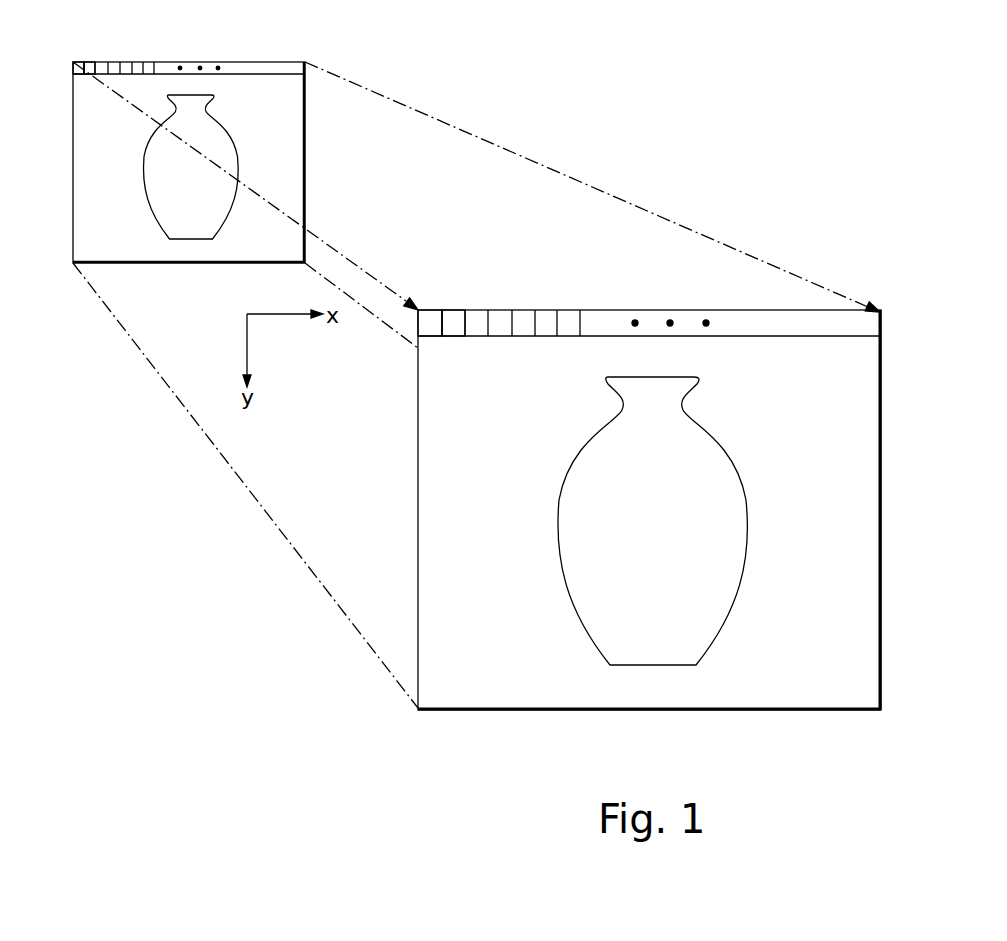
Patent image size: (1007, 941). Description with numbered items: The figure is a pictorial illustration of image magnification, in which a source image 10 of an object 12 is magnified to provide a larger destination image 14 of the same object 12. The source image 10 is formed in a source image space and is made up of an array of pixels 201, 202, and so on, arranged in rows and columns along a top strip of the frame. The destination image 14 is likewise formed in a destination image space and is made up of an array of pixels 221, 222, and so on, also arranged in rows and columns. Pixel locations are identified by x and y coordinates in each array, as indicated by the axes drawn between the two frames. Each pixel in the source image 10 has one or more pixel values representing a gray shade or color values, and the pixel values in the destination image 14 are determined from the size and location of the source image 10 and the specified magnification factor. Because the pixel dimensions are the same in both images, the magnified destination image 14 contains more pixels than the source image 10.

The source image 10 is at (257, 61).
The object 12 is at (725, 456).
The destination image 14 is at (418, 495).
The pixel 201 is at (82, 61).
The pixel 202 is at (90, 61).
The pixel 221 is at (430, 309).
The pixel 222 is at (451, 309).